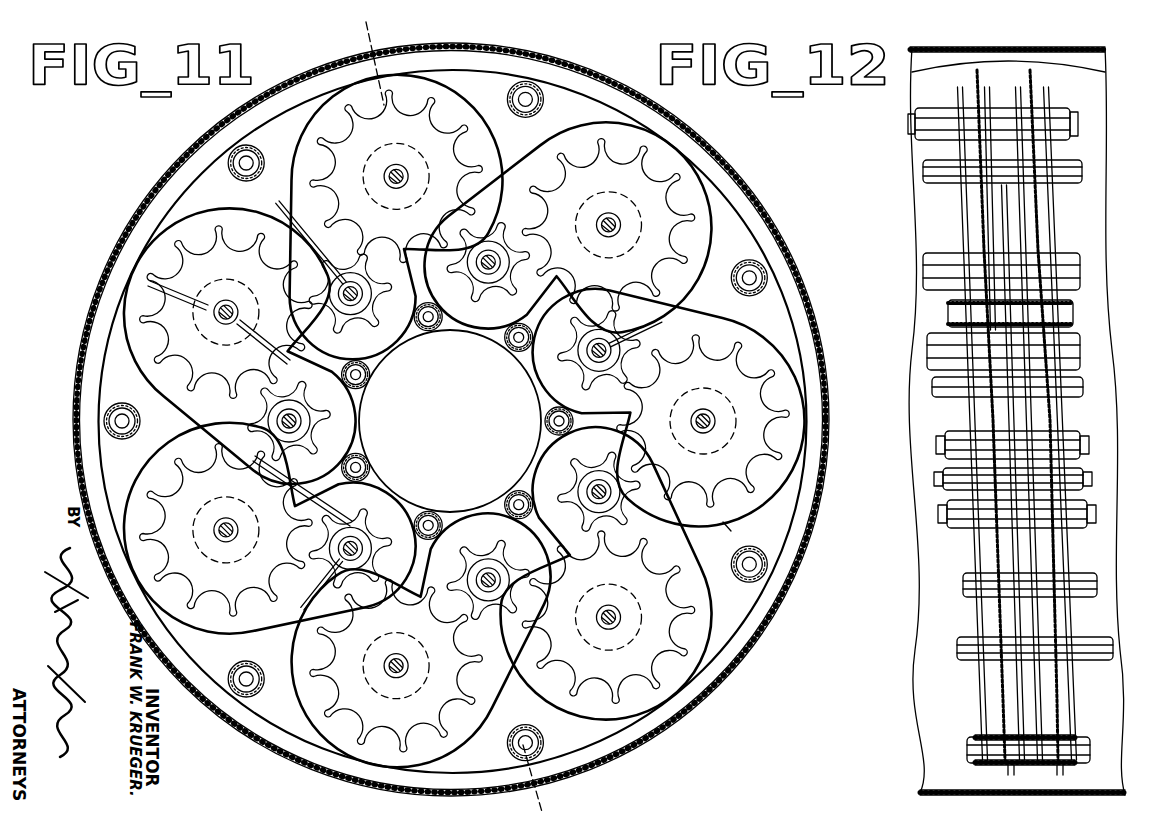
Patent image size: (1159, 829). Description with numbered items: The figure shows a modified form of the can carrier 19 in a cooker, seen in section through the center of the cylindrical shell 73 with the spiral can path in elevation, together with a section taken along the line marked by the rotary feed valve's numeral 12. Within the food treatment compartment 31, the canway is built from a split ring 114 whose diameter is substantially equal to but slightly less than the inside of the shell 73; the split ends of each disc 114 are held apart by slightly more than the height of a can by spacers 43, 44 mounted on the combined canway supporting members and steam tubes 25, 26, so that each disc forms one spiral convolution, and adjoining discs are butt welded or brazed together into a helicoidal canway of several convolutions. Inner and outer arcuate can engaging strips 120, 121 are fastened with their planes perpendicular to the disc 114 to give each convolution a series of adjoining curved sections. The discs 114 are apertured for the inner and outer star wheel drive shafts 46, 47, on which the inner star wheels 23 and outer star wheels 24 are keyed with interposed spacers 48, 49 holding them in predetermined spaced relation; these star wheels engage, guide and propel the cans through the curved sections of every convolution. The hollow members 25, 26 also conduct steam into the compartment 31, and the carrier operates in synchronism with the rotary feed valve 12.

In FIG. 11, the rotary feed valve 12 is at (378, 34).
In FIG. 11, the can carrier 19 is at (777, 331).
In FIG. 11, the inner star wheels 23 is at (648, 183).
In FIG. 12, the inner star wheels 23 is at (983, 695).
In FIG. 11, the outer star wheels 24 is at (358, 525).
In FIG. 12, the outer star wheels 24 is at (997, 608).
In FIG. 11, the inner canway supporting member and steam tube 25 is at (515, 348).
In FIG. 12, the inner canway supporting member and steam tube 25 is at (952, 311).
In FIG. 11, the outer canway supporting member and steam tube 26 is at (757, 268).
In FIG. 12, the outer canway supporting member and steam tube 26 is at (943, 128).
In FIG. 11, the food treatment compartment 31 is at (753, 228).
In FIG. 12, the food treatment compartment 31 is at (1093, 107).
In FIG. 11, the spacers 43 is at (514, 338).
In FIG. 12, the spacers 43 is at (957, 293).
In FIG. 11, the spacers 44 is at (762, 273).
In FIG. 12, the spacers 44 is at (940, 135).
In FIG. 11, the inner star wheel drive shaft 46 is at (599, 358).
In FIG. 11, the outer star wheel drive shaft 47 is at (707, 418).
In FIG. 12, the outer star wheel drive shaft 47 is at (943, 167).
In FIG. 11, the spacers 48 is at (489, 566).
In FIG. 11, the spacers 49 is at (609, 625).
In FIG. 11, the cylindrical shell 73 is at (772, 616).
In FIG. 12, the cylindrical shell 73 is at (1047, 47).
In FIG. 11, the split ring 114 is at (778, 530).
In FIG. 12, the split ring 114 is at (977, 77).
In FIG. 11, the inner arcuate can engaging strip 120 is at (479, 515).
In FIG. 11, the outer arcuate can engaging strip 121 is at (727, 527).